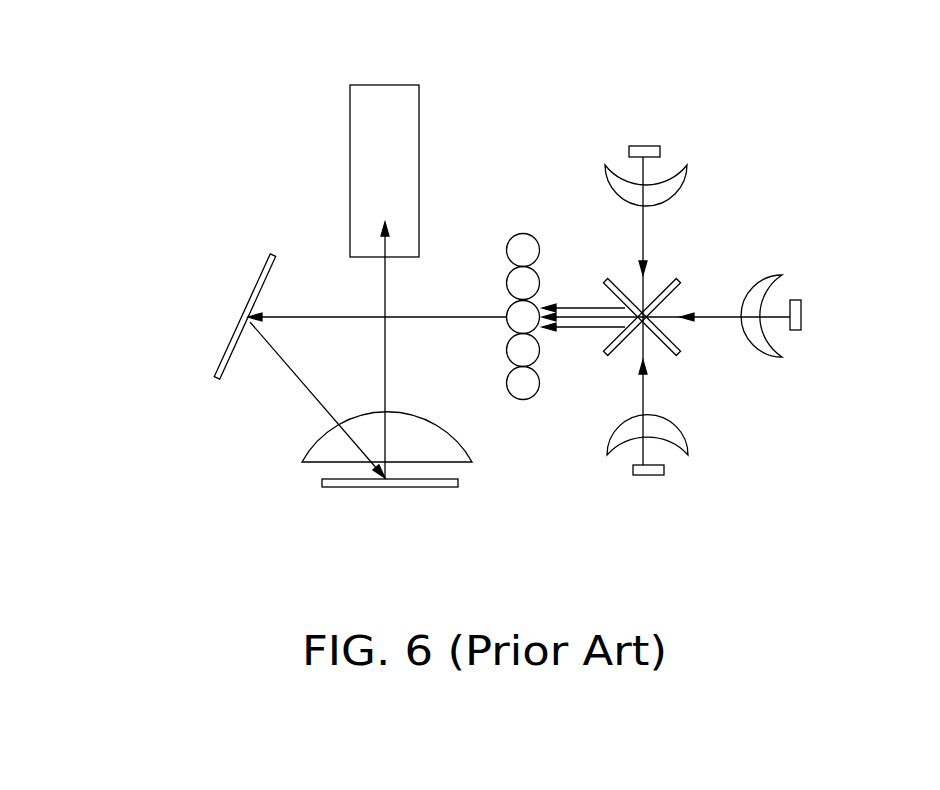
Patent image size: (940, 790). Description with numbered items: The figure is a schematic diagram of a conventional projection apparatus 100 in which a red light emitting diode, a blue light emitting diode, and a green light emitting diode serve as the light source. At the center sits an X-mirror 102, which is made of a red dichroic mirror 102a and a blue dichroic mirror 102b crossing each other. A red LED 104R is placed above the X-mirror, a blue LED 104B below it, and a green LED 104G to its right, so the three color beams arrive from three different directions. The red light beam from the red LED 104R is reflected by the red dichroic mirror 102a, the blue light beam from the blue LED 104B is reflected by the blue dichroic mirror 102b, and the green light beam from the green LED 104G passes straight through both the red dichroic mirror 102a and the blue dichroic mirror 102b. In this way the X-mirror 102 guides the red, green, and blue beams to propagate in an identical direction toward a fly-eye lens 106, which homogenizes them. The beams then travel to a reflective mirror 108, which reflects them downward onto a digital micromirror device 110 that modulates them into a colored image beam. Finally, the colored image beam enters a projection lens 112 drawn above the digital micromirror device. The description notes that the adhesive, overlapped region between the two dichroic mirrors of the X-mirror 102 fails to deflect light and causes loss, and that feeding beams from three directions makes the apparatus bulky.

The projection apparatus 100 is at (137, 63).
The X-mirror 102 is at (694, 324).
The red dichroic mirror 102a is at (677, 280).
The blue dichroic mirror 102b is at (680, 355).
The red LED 104R is at (645, 146).
The green LED 104G is at (802, 318).
The blue LED 104B is at (647, 476).
The fly-eye lens 106 is at (517, 234).
The reflective mirror 108 is at (245, 312).
The digital micromirror device 110 is at (322, 478).
The projection lens 112 is at (350, 164).